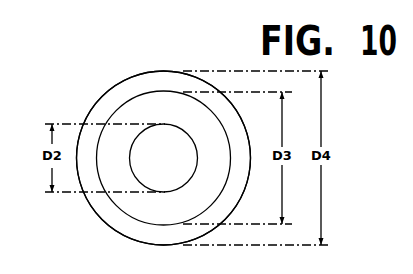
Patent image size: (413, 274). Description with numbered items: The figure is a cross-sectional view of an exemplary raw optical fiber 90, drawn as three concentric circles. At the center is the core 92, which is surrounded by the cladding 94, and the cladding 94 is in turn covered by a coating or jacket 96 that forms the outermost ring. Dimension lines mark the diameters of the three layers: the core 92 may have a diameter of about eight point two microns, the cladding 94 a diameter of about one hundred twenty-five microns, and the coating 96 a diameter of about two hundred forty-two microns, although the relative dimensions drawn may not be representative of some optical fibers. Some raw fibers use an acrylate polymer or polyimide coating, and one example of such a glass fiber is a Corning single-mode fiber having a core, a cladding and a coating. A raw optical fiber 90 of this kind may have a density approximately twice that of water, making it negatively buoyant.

The raw optical fiber 90 is at (91, 92).
The core 92 is at (153, 164).
The cladding 94 is at (153, 117).
The coating 96 is at (155, 82).